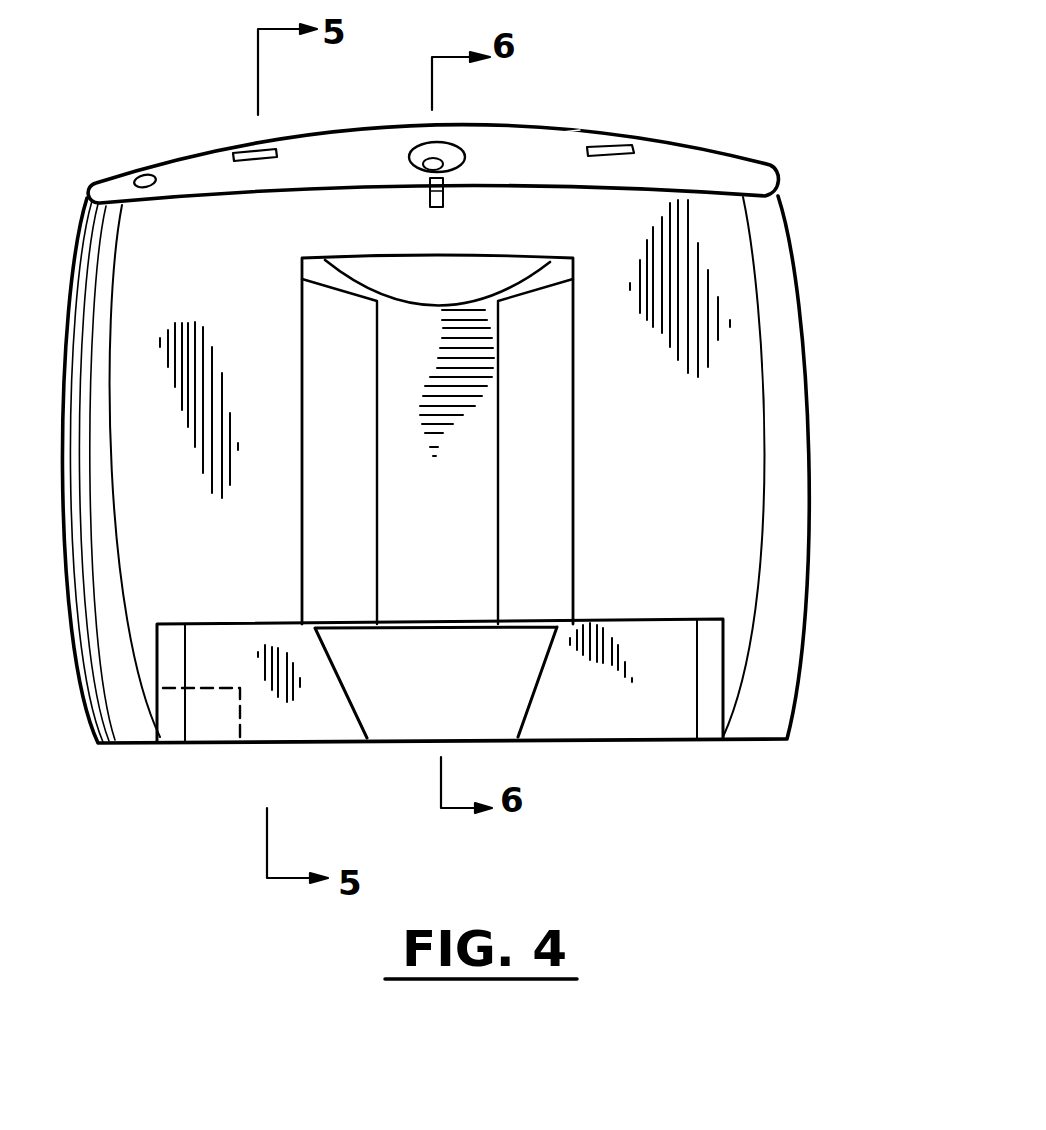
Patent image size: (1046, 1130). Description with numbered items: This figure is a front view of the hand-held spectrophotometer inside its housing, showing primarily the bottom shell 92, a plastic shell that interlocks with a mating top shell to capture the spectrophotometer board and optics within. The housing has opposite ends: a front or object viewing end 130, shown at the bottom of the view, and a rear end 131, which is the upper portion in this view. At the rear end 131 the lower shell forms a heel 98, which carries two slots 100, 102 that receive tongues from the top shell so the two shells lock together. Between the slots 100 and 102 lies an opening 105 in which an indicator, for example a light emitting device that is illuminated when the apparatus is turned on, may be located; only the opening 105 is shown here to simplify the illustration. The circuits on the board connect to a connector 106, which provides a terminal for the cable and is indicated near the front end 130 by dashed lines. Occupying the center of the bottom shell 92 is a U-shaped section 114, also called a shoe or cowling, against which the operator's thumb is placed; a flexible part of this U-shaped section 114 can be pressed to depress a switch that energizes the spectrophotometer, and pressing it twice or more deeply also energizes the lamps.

The bottom shell 92 is at (752, 448).
The heel 98 is at (506, 142).
The slot 100 is at (266, 151).
The slot 102 is at (623, 139).
The opening 105 is at (410, 157).
The connector 106 is at (190, 745).
The U-shaped section 114 is at (541, 446).
The front or object viewing end 130 is at (612, 740).
The rear end 131 is at (569, 143).